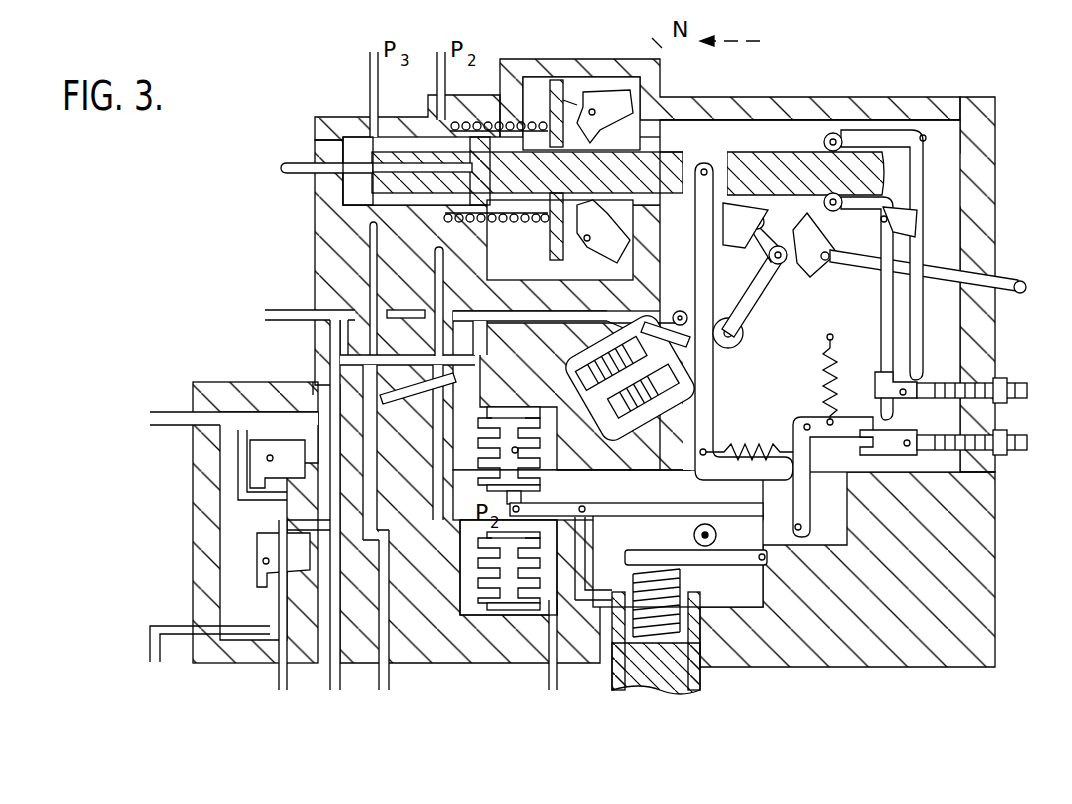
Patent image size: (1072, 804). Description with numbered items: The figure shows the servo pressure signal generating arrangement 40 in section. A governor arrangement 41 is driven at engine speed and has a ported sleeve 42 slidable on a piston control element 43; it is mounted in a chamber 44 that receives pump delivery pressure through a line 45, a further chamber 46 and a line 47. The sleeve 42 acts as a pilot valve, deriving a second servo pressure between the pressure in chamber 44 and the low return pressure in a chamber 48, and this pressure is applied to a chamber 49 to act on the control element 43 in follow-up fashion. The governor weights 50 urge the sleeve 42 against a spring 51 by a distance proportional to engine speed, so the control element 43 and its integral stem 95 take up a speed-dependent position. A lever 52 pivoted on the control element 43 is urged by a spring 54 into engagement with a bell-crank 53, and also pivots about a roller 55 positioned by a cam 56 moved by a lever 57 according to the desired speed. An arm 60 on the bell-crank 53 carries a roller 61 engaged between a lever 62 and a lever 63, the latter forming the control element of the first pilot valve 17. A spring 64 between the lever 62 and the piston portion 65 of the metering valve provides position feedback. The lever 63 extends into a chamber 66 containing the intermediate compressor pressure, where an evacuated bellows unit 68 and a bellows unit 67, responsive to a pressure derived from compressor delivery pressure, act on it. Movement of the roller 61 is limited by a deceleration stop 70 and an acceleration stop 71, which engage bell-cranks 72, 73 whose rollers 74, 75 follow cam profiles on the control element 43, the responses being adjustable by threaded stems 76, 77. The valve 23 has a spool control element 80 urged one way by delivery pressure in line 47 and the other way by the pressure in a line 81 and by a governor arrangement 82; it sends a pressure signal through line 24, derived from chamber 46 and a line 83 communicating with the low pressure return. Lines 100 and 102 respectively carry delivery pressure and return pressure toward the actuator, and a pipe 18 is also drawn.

The first pilot valve 17 is at (652, 526).
The pipe 18 is at (552, 675).
The valve 23 is at (178, 472).
The line 24 is at (150, 658).
The servo pressure signal generating arrangement 40 is at (300, 228).
The governor arrangement 41 is at (563, 103).
The ported sleeve 42 is at (483, 128).
The piston control element 43 is at (660, 157).
The chamber 44 is at (600, 85).
The line 45 is at (340, 357).
The further chamber 46 is at (292, 420).
The line 47 is at (280, 673).
The chamber 48 is at (760, 127).
The chamber 49 is at (347, 137).
The governor weights 50 is at (610, 237).
The spring 51 is at (533, 120).
The lever 52 is at (702, 385).
The bell-crank 53 is at (802, 528).
The spring 54 is at (737, 447).
The roller 55 is at (745, 335).
The cam 56 is at (812, 270).
The lever 57 is at (1003, 283).
The arm 60 is at (767, 530).
The roller 61 is at (710, 545).
The lever 62 is at (750, 563).
The lever 63 is at (652, 522).
The spring 64 is at (610, 653).
The piston portion 65 is at (688, 680).
The chamber 66 is at (467, 607).
The bellows unit 67 is at (513, 600).
The bellows unit 68 is at (520, 437).
The stop 70 is at (872, 395).
The stop 71 is at (860, 445).
The bell-crank 72 is at (930, 183).
The bell-crank 73 is at (890, 303).
The roller 74 is at (822, 141).
The roller 75 is at (822, 204).
The threaded stem 76 is at (980, 383).
The threaded stem 77 is at (980, 458).
The spool control element 80 is at (253, 510).
The line 81 is at (385, 675).
The governor arrangement 82 is at (263, 557).
The line 83 is at (332, 673).
The stem 95 is at (297, 163).
The line 100 is at (157, 412).
The line 102 is at (277, 310).